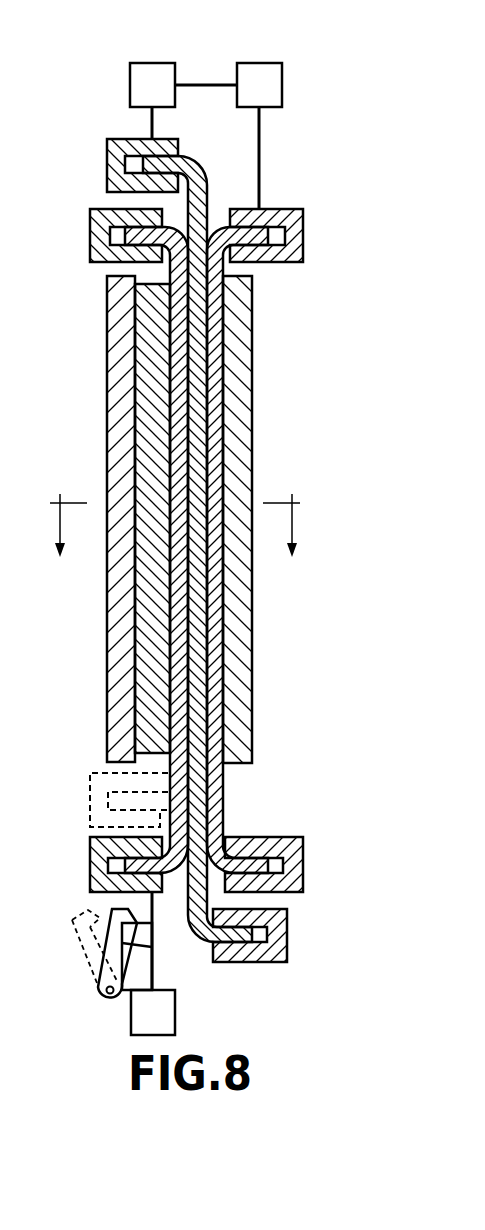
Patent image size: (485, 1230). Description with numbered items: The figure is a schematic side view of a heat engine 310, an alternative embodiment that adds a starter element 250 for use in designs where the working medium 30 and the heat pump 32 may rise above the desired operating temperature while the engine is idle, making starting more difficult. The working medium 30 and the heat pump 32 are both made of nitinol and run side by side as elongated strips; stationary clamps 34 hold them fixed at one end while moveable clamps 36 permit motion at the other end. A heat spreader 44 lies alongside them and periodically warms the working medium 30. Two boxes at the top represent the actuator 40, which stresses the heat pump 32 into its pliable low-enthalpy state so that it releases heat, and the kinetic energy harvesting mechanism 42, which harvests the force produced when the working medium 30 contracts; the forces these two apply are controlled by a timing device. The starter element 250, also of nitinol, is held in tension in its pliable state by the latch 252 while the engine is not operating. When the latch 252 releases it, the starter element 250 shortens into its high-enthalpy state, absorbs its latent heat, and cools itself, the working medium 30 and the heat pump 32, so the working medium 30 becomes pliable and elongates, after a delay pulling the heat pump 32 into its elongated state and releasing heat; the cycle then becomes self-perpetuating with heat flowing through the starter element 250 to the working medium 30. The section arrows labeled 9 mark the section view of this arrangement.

The working medium 30 is at (206, 180).
The heat pump 32 is at (224, 797).
The stationary clamps 34 is at (107, 161).
The moveable clamps 36 is at (90, 237).
The actuator 40 is at (259, 62).
The kinetic energy harvesting mechanism 42 is at (152, 62).
The heat spreader 44 is at (152, 398).
The starter element 250 is at (170, 270).
The latch 252 is at (112, 940).
The heat engine 310 is at (313, 122).
The section line 9- 9 is at (175, 510).